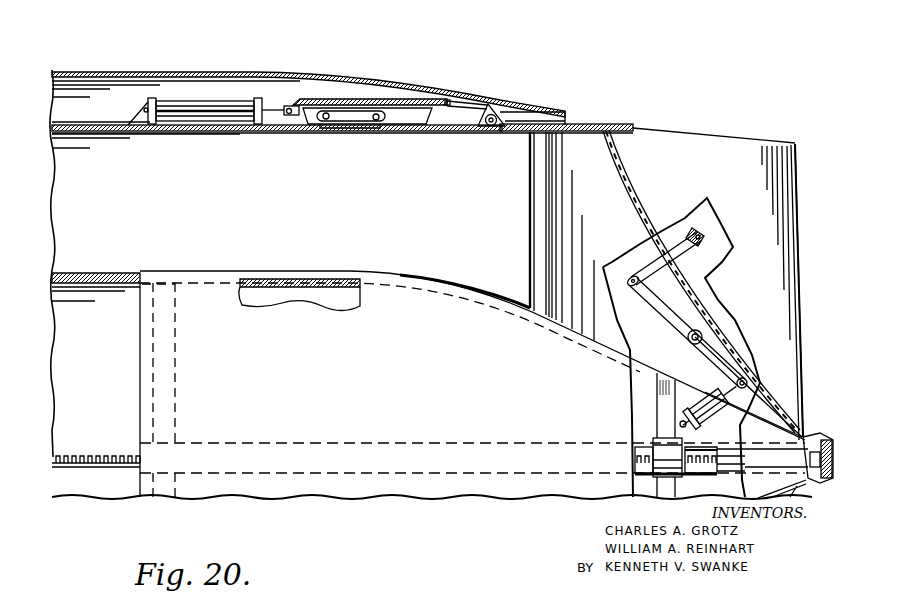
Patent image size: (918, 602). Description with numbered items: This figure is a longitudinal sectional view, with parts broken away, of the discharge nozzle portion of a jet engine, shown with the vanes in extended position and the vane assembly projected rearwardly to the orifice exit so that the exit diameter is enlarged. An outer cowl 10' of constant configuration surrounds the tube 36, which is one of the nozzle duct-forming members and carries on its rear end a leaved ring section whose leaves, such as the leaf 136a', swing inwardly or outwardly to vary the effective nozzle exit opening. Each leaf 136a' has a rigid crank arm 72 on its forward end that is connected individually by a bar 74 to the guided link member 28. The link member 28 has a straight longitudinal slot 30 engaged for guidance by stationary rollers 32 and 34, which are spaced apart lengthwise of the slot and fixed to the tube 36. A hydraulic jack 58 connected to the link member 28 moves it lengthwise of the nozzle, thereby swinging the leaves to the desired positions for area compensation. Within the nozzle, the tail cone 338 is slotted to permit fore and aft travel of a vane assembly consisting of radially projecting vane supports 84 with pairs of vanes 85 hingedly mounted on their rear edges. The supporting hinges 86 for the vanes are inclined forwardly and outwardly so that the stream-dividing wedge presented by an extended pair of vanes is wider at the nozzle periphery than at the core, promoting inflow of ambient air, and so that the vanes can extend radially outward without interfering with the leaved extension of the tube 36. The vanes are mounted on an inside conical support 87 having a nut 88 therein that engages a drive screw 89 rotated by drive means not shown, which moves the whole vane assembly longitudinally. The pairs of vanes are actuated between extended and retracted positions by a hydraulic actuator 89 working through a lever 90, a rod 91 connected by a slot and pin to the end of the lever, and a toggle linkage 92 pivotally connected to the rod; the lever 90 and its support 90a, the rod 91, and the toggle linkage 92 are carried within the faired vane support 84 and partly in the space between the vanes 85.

The outer cowl 10' is at (308, 82).
The hydraulic jack 58 is at (197, 100).
The link member 28 is at (368, 100).
The longitudinal slot 30 is at (348, 112).
The stationary roller 32 is at (324, 120).
The stationary roller 34 is at (380, 121).
The tube 36 is at (72, 126).
The bar 74 is at (458, 101).
The crank arm 72 is at (499, 105).
The leaf 136a' is at (343, 112).
The vane support 84 is at (538, 206).
The vanes 85 is at (748, 190).
The tail cone 338 is at (472, 287).
The supporting hinge 86 is at (735, 318).
The conical support 87 is at (476, 414).
The nut 88 is at (663, 448).
The drive screw / hydraulic actuator 89 is at (112, 453).
The lever 90 is at (661, 306).
The lever support 90a is at (688, 337).
The rod 91 is at (646, 246).
The toggle linkage 92 is at (706, 233).